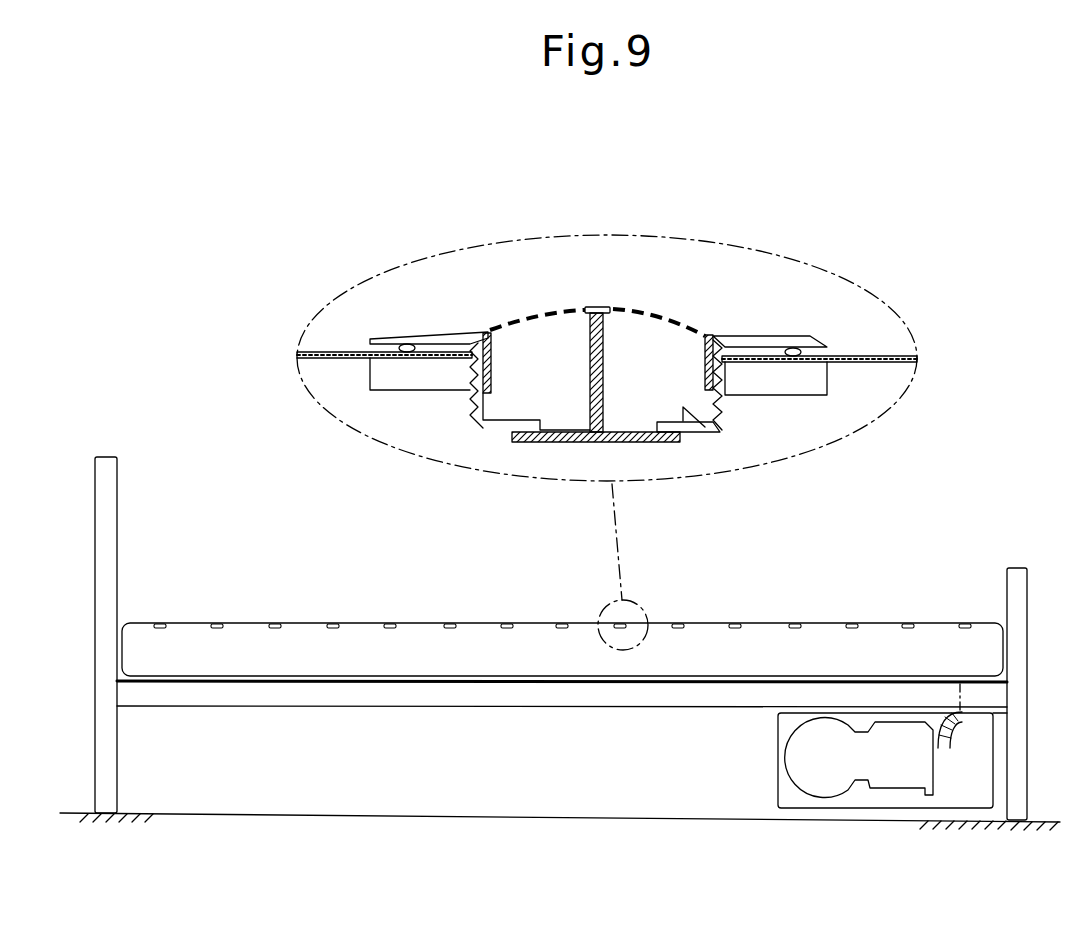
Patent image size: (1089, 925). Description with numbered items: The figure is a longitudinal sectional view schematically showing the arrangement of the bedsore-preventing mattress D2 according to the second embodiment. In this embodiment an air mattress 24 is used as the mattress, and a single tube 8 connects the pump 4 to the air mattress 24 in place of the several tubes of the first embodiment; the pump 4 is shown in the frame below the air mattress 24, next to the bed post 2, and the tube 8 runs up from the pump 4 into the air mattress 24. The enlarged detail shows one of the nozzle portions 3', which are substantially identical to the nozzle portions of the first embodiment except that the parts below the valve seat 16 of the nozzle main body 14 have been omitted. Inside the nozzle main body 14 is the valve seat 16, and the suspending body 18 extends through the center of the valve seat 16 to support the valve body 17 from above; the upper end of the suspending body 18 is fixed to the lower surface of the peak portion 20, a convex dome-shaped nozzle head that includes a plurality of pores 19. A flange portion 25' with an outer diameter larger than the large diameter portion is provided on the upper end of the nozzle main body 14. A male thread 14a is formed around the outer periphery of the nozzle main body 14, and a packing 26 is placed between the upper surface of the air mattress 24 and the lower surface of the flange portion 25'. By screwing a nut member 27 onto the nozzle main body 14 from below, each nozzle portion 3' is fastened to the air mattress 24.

The bed frame post 2 is at (117, 533).
The nozzle portion 3' is at (562, 481).
The pump 4 is at (950, 808).
The tube 8 is at (1000, 716).
The nozzle main body 14 is at (478, 422).
The male thread 14a is at (465, 385).
The valve seat 16 is at (695, 425).
The valve body 17 is at (655, 443).
The suspending body 18 is at (605, 385).
The pores 19 is at (645, 310).
The peak portion 20 is at (600, 305).
The air mattress 24 is at (880, 356).
The flange portion 25' is at (598, 309).
The packing 26 is at (800, 351).
The nut member 27 is at (795, 396).
The bedsore-preventing mattress D2 is at (966, 505).